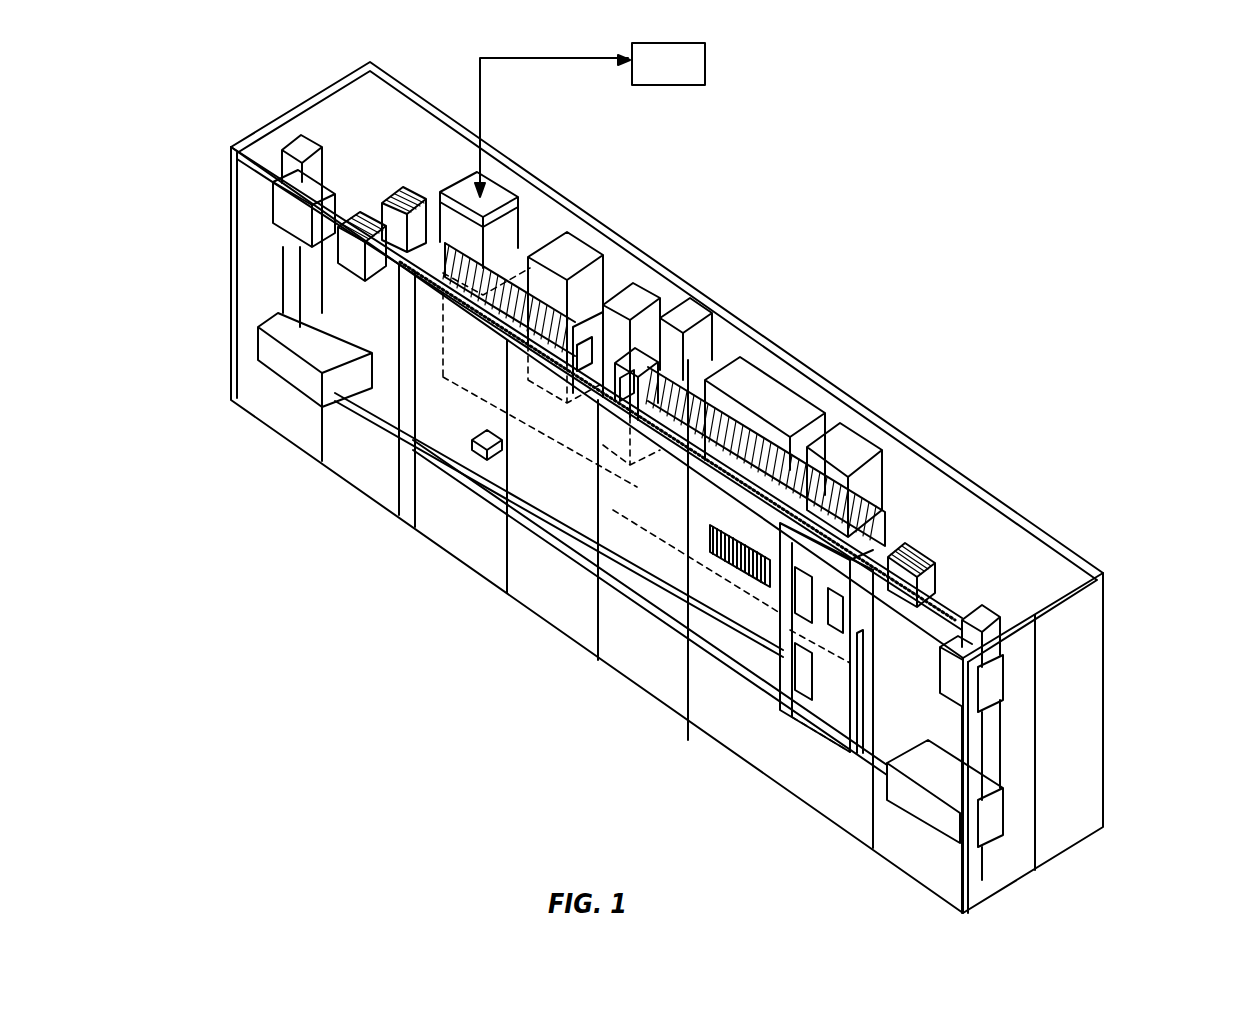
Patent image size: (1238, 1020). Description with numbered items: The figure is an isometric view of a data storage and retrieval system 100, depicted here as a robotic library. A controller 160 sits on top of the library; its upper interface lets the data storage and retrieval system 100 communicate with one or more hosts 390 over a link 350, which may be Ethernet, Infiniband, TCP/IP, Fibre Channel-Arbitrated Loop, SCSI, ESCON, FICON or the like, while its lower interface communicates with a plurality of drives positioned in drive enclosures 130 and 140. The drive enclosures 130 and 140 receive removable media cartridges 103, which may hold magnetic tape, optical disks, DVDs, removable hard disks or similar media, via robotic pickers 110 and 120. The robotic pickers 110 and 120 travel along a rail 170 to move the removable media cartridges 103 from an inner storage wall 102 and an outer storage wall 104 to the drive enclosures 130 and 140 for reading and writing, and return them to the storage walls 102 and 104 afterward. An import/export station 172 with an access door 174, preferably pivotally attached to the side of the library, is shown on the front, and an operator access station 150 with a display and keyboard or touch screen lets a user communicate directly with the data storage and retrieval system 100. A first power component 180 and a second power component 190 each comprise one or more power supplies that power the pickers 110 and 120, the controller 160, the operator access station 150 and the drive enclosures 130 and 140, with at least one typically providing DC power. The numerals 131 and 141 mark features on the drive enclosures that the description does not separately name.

The data storage and retrieval system 100 is at (890, 115).
The inner storage wall 102 is at (567, 262).
The removable media cartridges 103 is at (477, 447).
The outer storage wall 104 is at (457, 430).
The robotic picker 110 is at (287, 212).
The robotic picker 120 is at (990, 680).
The drive enclosure 130 is at (640, 302).
The process module window 131 is at (632, 298).
The drive enclosure 140 is at (680, 330).
The process module window 141 is at (655, 378).
The operator access station 150 is at (593, 262).
The controller 160 is at (490, 202).
The rail 170 is at (557, 545).
The import/export station 172 is at (840, 707).
The access door 174 is at (803, 677).
The first power component 180 is at (905, 555).
The second power component 190 is at (958, 610).
The link 350 is at (503, 57).
The hosts 390 is at (670, 43).